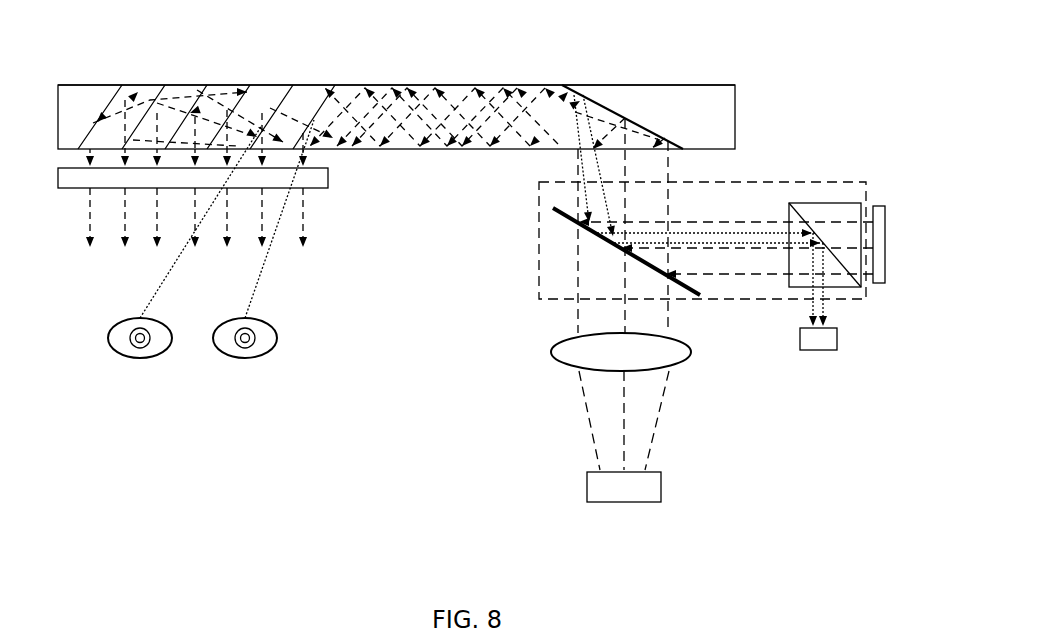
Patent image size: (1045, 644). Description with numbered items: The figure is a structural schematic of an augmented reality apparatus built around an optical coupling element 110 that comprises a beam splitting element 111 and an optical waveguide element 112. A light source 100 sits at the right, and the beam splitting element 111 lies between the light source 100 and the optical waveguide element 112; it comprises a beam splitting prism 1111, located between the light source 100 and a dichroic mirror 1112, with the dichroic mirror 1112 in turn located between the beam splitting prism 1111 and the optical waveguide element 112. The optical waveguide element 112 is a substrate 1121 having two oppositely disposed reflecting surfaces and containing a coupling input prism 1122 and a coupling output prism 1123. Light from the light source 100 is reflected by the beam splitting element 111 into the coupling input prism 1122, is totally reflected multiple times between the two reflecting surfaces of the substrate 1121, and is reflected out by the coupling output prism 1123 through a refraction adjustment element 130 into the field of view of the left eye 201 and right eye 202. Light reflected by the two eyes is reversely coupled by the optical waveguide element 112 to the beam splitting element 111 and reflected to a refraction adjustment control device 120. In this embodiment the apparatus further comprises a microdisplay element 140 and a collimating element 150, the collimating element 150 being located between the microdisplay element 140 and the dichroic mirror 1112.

The optical coupling element 110 is at (816, 50).
The optical waveguide element 112 is at (727, 85).
The substrate 1121 is at (663, 85).
The coupling input prism 1122 is at (602, 107).
The coupling output prism 1123 is at (302, 127).
The beam splitting element 111 is at (736, 181).
The beam splitting prism 1111 is at (822, 204).
The dichroic mirror 1112 is at (553, 208).
The refraction adjustment element 130 is at (328, 179).
The light source 100 is at (880, 206).
The refraction adjustment control device 120 is at (838, 335).
The collimating element 150 is at (691, 352).
The microdisplay element 140 is at (662, 488).
The left eye 201 is at (112, 333).
The right eye 202 is at (275, 333).